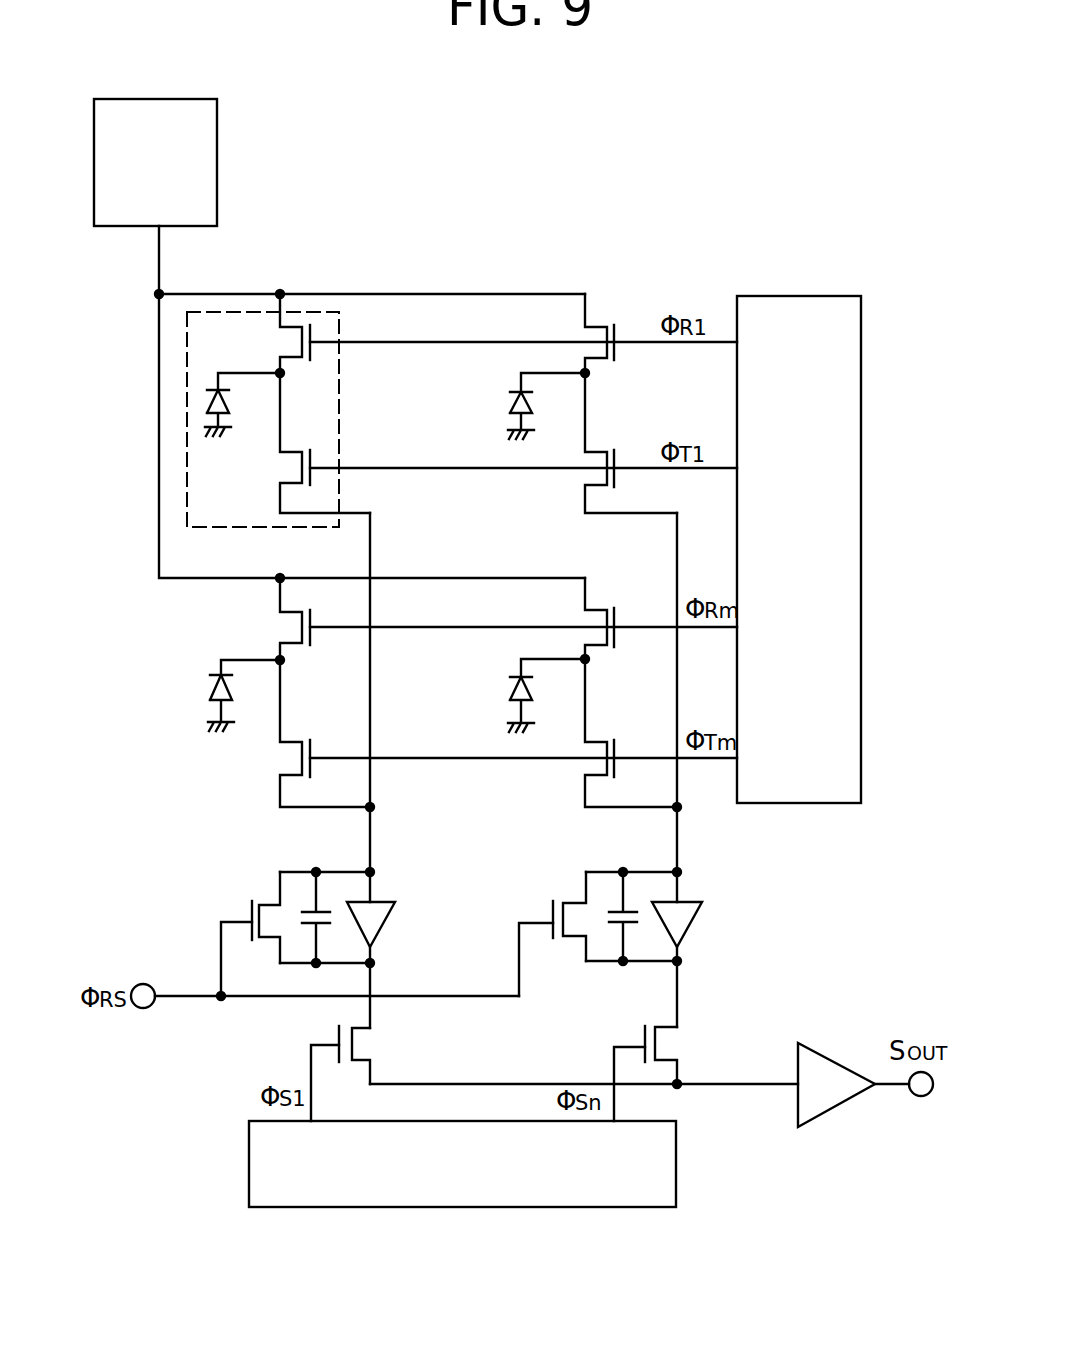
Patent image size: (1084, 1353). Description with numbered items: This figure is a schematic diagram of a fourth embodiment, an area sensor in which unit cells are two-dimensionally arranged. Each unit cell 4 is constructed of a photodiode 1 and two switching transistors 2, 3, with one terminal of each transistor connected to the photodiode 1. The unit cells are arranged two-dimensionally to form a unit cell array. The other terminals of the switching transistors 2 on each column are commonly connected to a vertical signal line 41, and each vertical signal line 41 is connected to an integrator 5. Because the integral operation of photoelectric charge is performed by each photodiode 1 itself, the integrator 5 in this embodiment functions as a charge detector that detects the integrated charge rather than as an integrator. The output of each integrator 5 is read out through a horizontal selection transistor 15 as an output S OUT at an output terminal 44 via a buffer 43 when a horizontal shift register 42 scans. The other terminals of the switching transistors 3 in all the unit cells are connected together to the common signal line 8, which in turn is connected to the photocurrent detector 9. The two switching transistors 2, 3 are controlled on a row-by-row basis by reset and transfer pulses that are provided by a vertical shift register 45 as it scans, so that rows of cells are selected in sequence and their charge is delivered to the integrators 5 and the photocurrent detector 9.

The photodiode 1 is at (237, 405).
The switching transistor 2 is at (288, 474).
The switching transistor 3 is at (279, 341).
The unit cell 4 is at (340, 437).
The integrator 5 is at (391, 926).
The common signal line 8 is at (158, 419).
The photocurrent detector 9 is at (217, 138).
The horizontal selection transistor 15 is at (372, 1046).
The vertical signal line 41 is at (371, 697).
The horizontal shift register 42 is at (442, 1208).
The buffer 43 is at (837, 1107).
The output terminal 44 is at (921, 1097).
The vertical shift register 45 is at (796, 296).